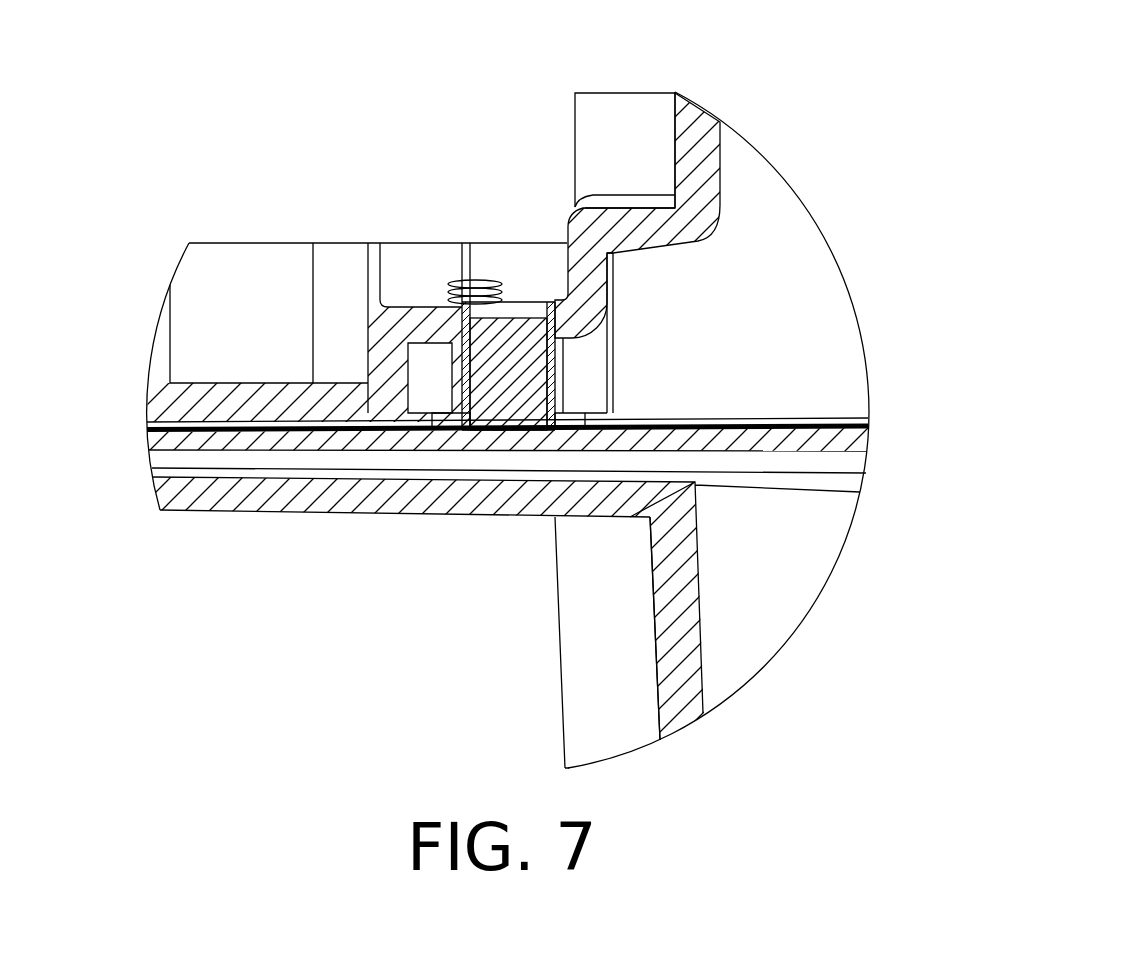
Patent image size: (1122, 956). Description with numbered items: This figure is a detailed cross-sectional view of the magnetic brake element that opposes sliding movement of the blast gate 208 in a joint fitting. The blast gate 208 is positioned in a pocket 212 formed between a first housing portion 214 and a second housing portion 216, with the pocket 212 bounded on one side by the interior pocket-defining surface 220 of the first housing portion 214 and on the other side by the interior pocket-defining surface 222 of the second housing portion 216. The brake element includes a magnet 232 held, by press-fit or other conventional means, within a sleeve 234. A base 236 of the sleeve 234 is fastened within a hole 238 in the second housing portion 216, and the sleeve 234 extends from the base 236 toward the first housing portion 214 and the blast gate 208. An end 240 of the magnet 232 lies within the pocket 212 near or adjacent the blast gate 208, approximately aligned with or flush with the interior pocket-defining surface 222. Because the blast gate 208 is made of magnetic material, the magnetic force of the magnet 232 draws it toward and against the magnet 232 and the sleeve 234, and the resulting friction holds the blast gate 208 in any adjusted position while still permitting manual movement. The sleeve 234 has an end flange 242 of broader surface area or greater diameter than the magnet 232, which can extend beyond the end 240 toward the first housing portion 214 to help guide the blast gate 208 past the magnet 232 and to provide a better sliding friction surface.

The blast gate 208 is at (855, 443).
The pocket 212 is at (409, 430).
The first housing portion 214 is at (680, 593).
The second housing portion 216 is at (613, 298).
The interior pocket-defining surface of the first housing portion 220 is at (602, 477).
The interior pocket-defining surface of the second housing portion 222 is at (287, 512).
The magnet 232 is at (500, 358).
The sleeve 234 is at (461, 340).
The base 236 is at (547, 300).
The hole 238 is at (518, 305).
The end 240 is at (510, 433).
The end flange 242 is at (583, 405).